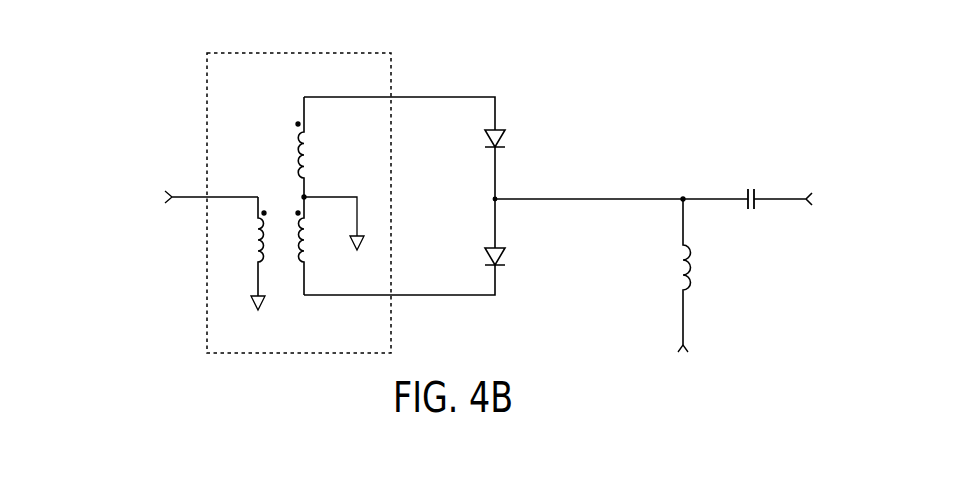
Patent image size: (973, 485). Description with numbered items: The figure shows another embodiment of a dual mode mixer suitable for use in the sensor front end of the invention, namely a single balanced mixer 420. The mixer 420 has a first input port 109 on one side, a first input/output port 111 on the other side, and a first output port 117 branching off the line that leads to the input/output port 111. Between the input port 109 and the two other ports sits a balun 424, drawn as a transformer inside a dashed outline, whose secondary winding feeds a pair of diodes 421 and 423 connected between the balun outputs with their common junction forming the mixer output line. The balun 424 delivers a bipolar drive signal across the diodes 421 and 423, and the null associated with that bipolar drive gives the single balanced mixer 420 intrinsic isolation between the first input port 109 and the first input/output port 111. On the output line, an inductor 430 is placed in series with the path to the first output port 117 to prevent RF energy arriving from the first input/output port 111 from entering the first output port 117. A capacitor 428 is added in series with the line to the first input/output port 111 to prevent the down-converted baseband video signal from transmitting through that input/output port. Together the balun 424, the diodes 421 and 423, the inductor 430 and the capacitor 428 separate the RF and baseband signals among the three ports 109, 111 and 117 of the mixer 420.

The single balanced mixer 420 is at (134, 112).
The balun 424 is at (231, 62).
The diode 421 is at (505, 138).
The diode 423 is at (505, 256).
The capacitor 428 is at (746, 192).
The inductor 430 is at (690, 277).
The first input port 109 is at (172, 199).
The first input/output port 111 is at (808, 206).
The first output port 117 is at (688, 350).